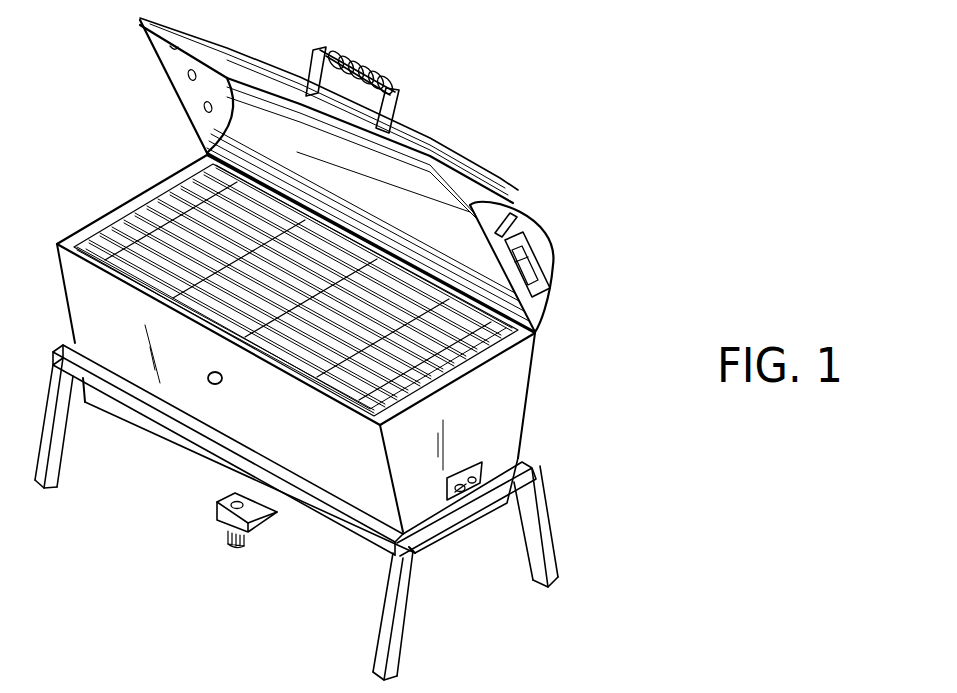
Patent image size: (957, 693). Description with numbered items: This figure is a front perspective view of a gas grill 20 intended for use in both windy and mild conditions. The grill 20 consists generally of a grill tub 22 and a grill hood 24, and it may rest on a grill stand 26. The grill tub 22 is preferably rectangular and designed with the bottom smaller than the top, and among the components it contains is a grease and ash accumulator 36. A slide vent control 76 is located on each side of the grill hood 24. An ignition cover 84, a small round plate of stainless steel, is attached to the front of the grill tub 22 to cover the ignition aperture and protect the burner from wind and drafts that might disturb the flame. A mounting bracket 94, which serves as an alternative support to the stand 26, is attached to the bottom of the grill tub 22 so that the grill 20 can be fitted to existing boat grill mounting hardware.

The grill 20 is at (507, 155).
The grill tub 22 is at (537, 372).
The grill hood 24 is at (553, 238).
The grill stand 26 is at (550, 527).
The grease and ash accumulator 36 is at (482, 468).
The slide vent control 76 is at (513, 232).
The ignition cover 84 is at (208, 378).
The mounting bracket 94 is at (265, 523).